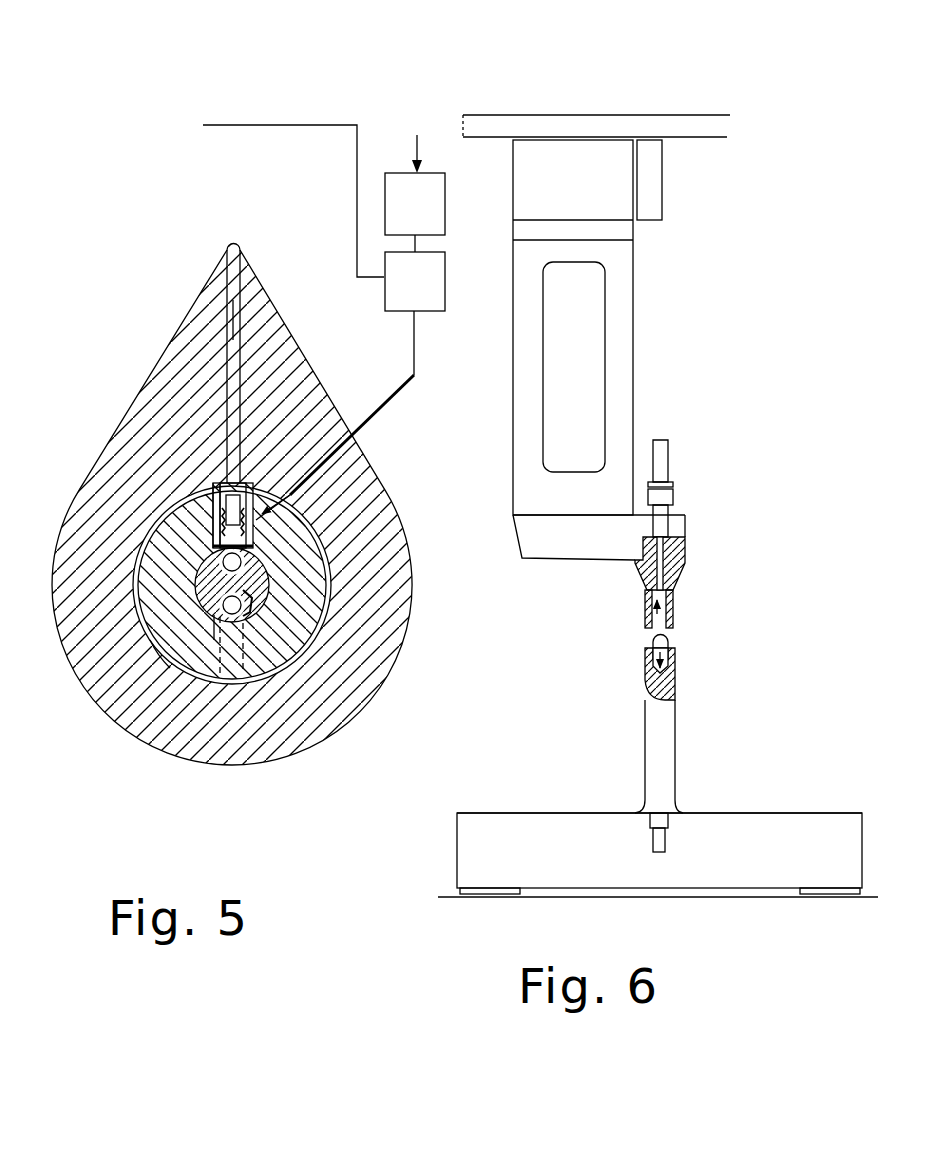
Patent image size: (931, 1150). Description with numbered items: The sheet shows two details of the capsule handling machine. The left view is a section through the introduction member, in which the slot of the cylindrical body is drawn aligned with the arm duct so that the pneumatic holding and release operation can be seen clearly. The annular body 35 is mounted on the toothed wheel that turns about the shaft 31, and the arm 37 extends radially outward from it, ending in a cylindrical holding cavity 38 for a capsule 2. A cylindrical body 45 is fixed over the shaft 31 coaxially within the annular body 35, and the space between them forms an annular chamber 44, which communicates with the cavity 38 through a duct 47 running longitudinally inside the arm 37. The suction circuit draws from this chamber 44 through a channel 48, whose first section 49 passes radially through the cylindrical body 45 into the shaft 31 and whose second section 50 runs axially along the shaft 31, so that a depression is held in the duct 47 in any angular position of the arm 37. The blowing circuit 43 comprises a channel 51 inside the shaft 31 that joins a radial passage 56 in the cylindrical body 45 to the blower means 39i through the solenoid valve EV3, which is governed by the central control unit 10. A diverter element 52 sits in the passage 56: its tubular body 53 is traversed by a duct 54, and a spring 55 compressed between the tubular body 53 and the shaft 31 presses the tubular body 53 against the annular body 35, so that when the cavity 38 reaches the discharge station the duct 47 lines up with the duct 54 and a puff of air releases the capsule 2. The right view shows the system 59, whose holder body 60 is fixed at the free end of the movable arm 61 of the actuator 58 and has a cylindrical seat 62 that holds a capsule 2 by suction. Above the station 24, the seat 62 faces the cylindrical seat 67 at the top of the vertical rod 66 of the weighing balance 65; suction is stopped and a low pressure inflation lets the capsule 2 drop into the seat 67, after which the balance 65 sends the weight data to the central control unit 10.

In FIG. 5, the central control unit 10 is at (223, 176).
In FIG. 5, the blower means 39i is at (446, 213).
In FIG. 5, the solenoid valve EV3 is at (428, 311).
In FIG. 5, the arm 37 is at (272, 322).
In FIG. 5, the annular body 35 is at (318, 742).
In FIG. 5, the cylindrical holding cavity 38 is at (235, 240).
In FIG. 5, the duct 47 is at (232, 322).
In FIG. 5, the blowing circuit 43 is at (270, 578).
In FIG. 5, the channel 51 is at (245, 560).
In FIG. 5, the channel 48 is at (246, 601).
In FIG. 5, the second section 50 is at (258, 612).
In FIG. 5, the duct 54 is at (270, 494).
In FIG. 5, the cylindrical body 45 is at (292, 543).
In FIG. 5, the spring 55 is at (215, 492).
In FIG. 5, the radial passage 56 is at (203, 502).
In FIG. 5, the diverter element 52 is at (246, 505).
In FIG. 5, the tubular body 53 is at (253, 482).
In FIG. 5, the first section 49 is at (245, 637).
In FIG. 5, the annular chamber 44 is at (166, 666).
In FIG. 5, the shaft 31 is at (213, 615).
In FIG. 6, the actuator 58 is at (643, 115).
In FIG. 6, the movable arm 61 is at (636, 330).
In FIG. 6, the system 59 is at (700, 500).
In FIG. 6, the holder body 60 is at (685, 580).
In FIG. 6, the cylindrical seat 62 is at (660, 616).
In FIG. 6, the capsule 2 is at (646, 649).
In FIG. 6, the cylindrical seat 67 is at (675, 650).
In FIG. 6, the vertical rod 66 is at (676, 737).
In FIG. 6, the weighing balance 65 is at (742, 888).
In FIG. 6, the station 24 is at (797, 767).